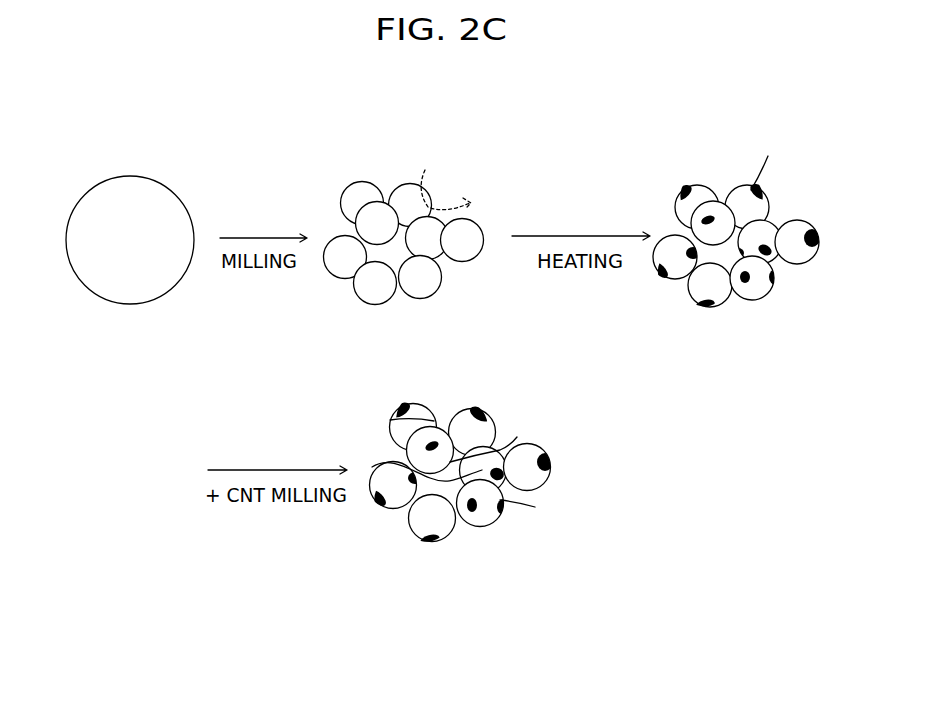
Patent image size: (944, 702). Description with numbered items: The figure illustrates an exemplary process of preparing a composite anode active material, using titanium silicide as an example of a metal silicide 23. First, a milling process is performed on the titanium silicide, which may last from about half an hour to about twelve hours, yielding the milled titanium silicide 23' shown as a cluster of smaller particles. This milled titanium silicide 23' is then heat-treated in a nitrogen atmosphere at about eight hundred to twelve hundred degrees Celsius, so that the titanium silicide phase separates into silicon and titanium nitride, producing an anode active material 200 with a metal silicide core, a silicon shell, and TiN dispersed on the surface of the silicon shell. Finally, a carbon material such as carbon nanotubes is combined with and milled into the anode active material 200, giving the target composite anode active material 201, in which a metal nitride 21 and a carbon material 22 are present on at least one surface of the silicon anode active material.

The metal silicide 23 is at (129, 217).
The milled titanium silicide 23' is at (400, 218).
The anode active material 200 is at (736, 229).
The composite anode active material 201 is at (513, 518).
The metal nitride 21 is at (470, 520).
The carbon material 22 is at (523, 507).